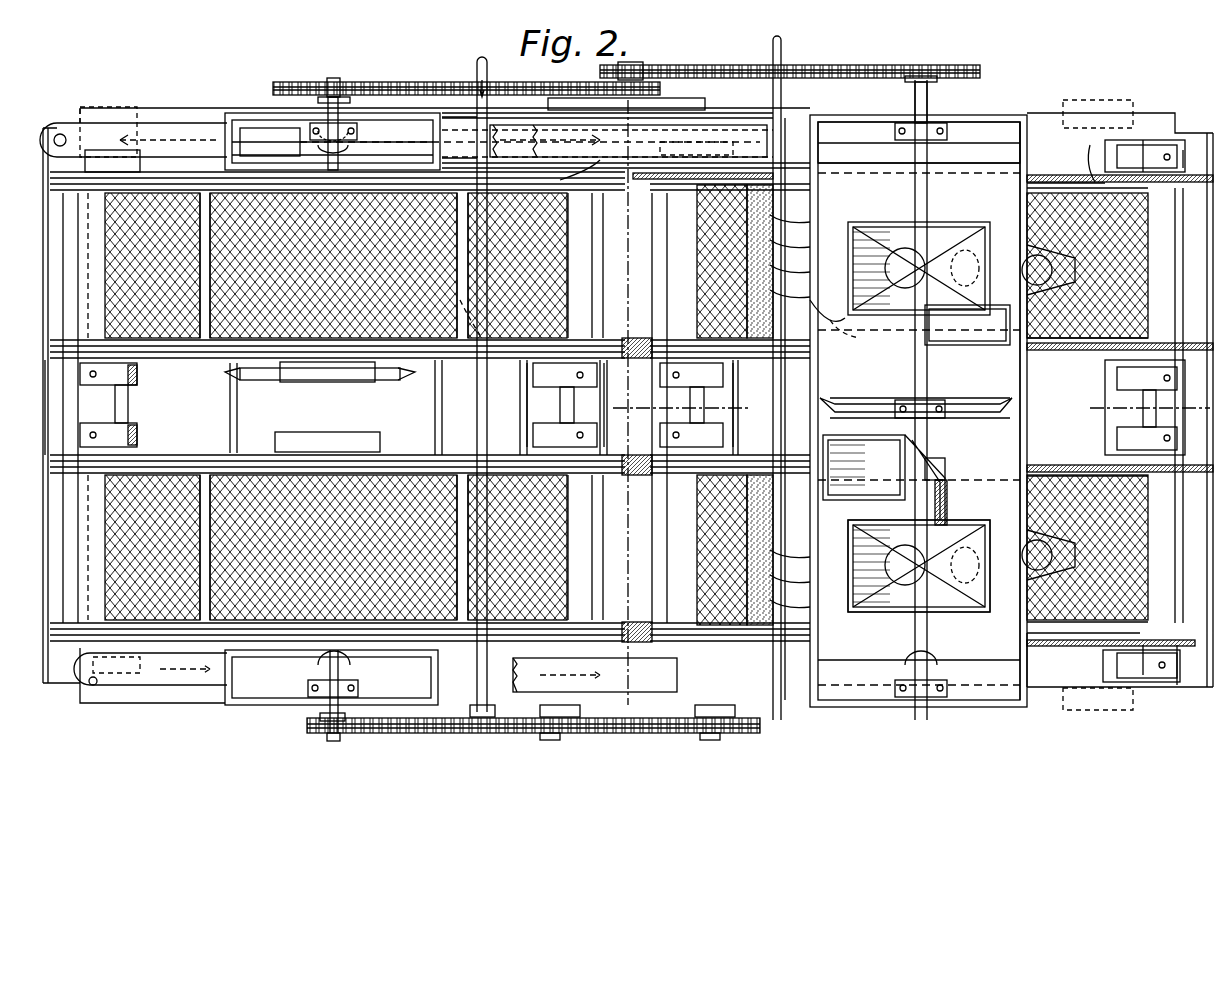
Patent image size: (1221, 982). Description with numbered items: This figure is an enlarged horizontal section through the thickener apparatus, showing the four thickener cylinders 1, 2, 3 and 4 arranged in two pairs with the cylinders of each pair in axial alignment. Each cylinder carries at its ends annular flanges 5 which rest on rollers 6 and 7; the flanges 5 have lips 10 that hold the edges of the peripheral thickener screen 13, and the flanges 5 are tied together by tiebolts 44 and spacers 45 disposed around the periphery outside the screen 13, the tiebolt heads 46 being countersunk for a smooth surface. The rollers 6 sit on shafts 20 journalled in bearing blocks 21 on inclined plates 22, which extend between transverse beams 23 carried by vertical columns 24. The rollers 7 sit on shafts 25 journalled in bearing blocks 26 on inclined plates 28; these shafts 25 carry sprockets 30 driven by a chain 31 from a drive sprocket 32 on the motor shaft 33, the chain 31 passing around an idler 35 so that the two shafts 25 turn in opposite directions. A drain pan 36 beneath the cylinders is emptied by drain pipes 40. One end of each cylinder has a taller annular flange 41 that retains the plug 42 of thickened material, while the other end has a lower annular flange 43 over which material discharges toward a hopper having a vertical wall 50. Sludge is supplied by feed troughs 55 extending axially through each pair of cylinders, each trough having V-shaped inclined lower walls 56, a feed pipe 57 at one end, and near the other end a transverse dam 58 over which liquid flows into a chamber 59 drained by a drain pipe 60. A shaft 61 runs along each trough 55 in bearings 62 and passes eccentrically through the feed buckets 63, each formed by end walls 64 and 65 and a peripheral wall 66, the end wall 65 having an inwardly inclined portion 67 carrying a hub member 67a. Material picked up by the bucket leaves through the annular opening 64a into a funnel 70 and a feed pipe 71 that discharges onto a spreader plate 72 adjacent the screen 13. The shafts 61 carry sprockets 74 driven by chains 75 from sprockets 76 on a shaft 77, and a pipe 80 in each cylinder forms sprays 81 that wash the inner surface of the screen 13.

The thickener cylinder 1 is at (74, 160).
The thickener cylinder 2 is at (68, 660).
The thickener cylinder 3 is at (40, 548).
The thickener cylinder 4 is at (1197, 665).
The annular flange 5 is at (147, 172).
The roller 6 is at (1100, 650).
The roller 7 is at (570, 195).
The lip 10 is at (720, 215).
The peripheral thickener screen 13 is at (255, 195).
The shaft 20 is at (110, 414).
The bearing block 21 is at (100, 165).
The inclined plate 22 is at (1148, 680).
The transverse beam 23 is at (200, 115).
The vertical column 24 is at (105, 120).
The shaft 25 is at (545, 418).
The bearing block 26 is at (545, 170).
The inclined plate 28 is at (690, 400).
The sprocket 30 is at (572, 718).
The chain 31 is at (410, 735).
The drive sprocket 32 is at (338, 742).
The shaft 33 is at (330, 745).
The idler 35 is at (484, 742).
The drain pan 36 is at (1040, 690).
The drain pipe 40 is at (672, 317).
The annular flange 41 is at (1075, 180).
The plug 42 is at (845, 325).
The annular flange 43 is at (1125, 375).
The tiebolt 44 is at (655, 290).
The spacer 45 is at (208, 185).
The head 46 is at (1182, 680).
The vertical wall 50 is at (535, 372).
The feed trough 55 is at (1010, 108).
The inclined lower wall 56 is at (1012, 680).
The feed pipe 57 is at (190, 700).
The transverse dam 58 is at (365, 160).
The chamber 59 is at (405, 165).
The drain pipe 60 is at (70, 125).
The shaft 61 is at (340, 76).
The bearing 62 is at (310, 700).
The feed bucket 63 is at (283, 406).
The end wall 64 is at (840, 520).
The annular opening 64a is at (470, 525).
The end wall 65 is at (915, 385).
The peripheral wall 66 is at (1000, 350).
The inwardly inclined portion 67 is at (948, 492).
The hub member 67a is at (958, 476).
The funnel 70 is at (315, 225).
The feed pipe 71 is at (900, 258).
The spreader plate 72 is at (220, 225).
The sprocket 74 is at (360, 103).
The chain 75 is at (555, 85).
The sprocket 76 is at (650, 68).
The shaft 77 is at (640, 108).
The pipe 80 is at (486, 68).
The spray 81 is at (810, 213).